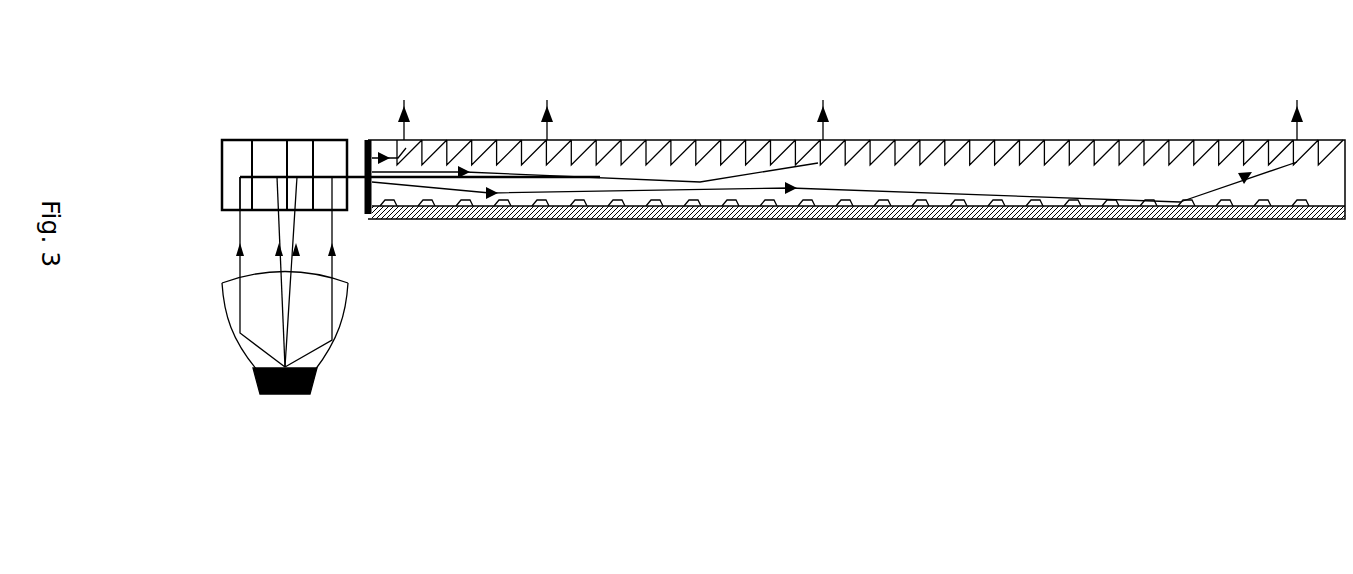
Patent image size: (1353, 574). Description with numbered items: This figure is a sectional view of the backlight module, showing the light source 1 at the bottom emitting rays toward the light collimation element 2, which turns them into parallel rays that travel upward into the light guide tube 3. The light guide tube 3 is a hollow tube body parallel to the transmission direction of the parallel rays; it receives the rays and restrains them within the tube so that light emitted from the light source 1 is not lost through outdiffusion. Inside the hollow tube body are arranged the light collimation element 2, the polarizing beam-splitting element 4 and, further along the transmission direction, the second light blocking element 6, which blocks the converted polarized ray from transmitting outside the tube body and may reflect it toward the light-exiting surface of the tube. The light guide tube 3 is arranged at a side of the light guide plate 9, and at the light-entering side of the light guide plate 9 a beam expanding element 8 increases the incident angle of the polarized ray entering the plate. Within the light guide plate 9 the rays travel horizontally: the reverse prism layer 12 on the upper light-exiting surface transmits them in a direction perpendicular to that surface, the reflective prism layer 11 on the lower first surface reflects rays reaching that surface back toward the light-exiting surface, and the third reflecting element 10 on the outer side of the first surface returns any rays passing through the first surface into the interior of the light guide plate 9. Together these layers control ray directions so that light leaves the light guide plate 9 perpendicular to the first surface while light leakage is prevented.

The light source 1 is at (318, 383).
The light collimation element 2 is at (222, 307).
The light guide tube 3 is at (222, 142).
The polarizing beam-splitting element 4 is at (232, 185).
The second light blocking element 6 is at (288, 172).
The beam expanding element 8 is at (364, 142).
The light guide plate 9 is at (1163, 187).
The third reflecting element 10 is at (715, 217).
The reflective prism layer 11 is at (870, 220).
The reverse prism layer 12 is at (932, 138).